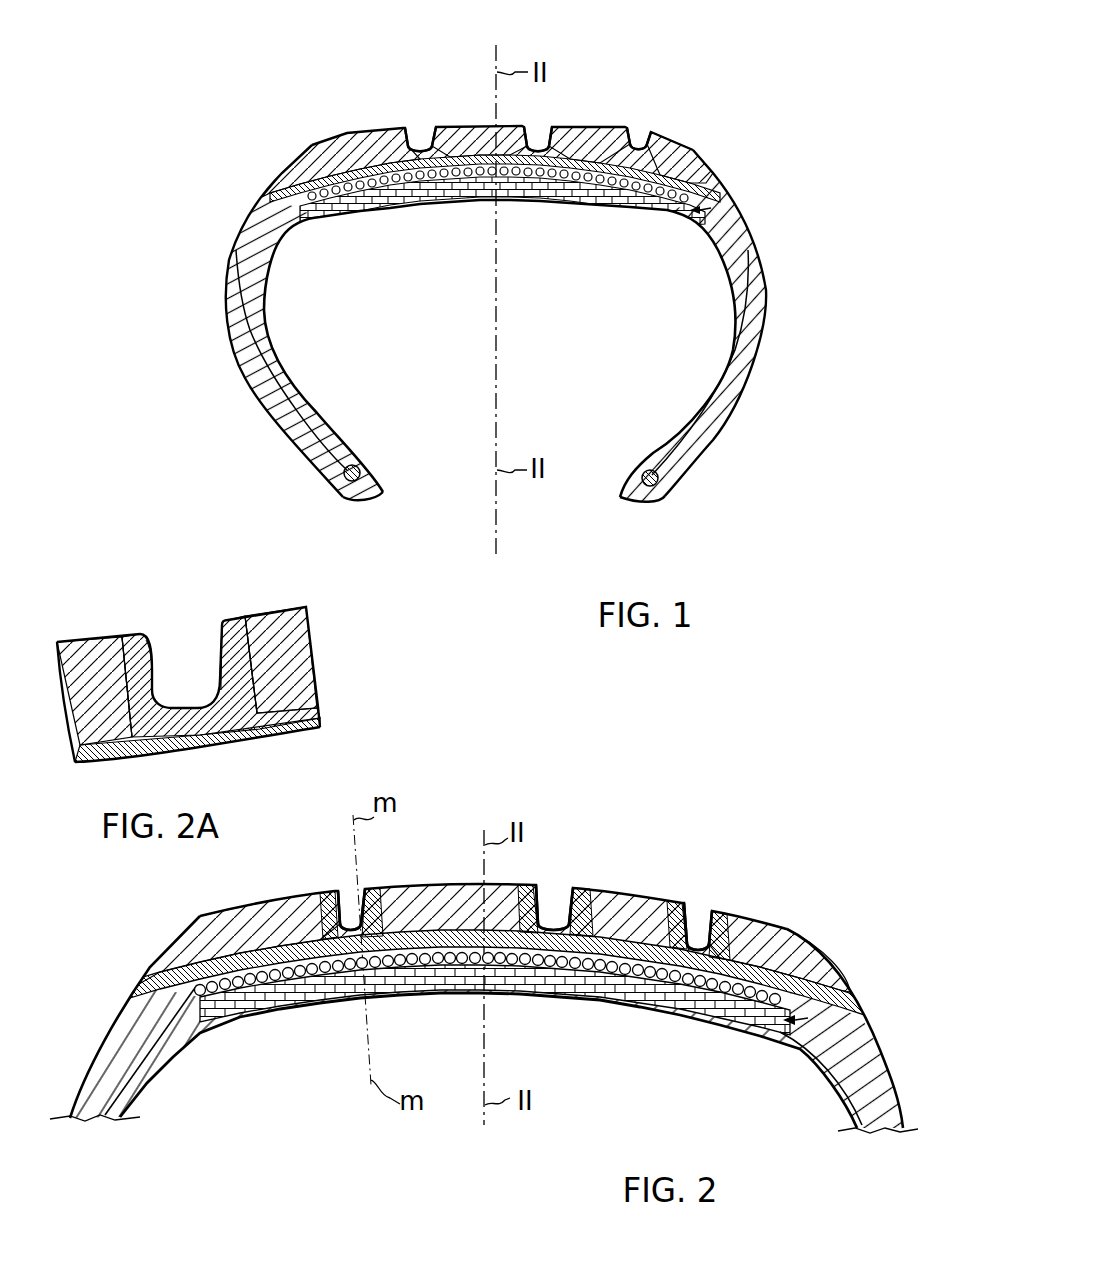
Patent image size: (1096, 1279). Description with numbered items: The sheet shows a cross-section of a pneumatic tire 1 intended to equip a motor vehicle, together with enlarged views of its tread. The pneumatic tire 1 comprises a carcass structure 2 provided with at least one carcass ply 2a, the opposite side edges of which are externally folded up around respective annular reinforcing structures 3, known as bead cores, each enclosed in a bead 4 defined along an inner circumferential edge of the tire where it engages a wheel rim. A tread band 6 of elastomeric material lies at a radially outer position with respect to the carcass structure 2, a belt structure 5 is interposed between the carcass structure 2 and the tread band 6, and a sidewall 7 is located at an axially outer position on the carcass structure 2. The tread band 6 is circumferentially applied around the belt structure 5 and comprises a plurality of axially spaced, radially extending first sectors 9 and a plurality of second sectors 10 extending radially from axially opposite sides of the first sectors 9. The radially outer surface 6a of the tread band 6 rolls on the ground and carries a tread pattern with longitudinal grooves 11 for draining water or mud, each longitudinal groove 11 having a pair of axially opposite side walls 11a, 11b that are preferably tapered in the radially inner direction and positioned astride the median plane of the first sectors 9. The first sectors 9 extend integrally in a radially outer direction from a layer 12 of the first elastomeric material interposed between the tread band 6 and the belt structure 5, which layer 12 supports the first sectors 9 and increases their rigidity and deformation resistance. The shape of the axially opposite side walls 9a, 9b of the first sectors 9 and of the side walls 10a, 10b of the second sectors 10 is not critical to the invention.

In FIG. 1, the pneumatic tire 1 is at (754, 103).
In FIG. 2, the pneumatic tire 1 is at (739, 849).
In FIG. 1, the carcass structure 2 is at (784, 299).
In FIG. 2, the carcass structure 2 is at (820, 1053).
In FIG. 1, the carcass ply 2a is at (710, 397).
In FIG. 1, the annular reinforcing structure 3 is at (668, 487).
In FIG. 1, the bead 4 is at (617, 481).
In FIG. 1, the belt structure 5 is at (760, 227).
In FIG. 2, the belt structure 5 is at (857, 1013).
In FIG. 1, the tread band 6 is at (715, 167).
In FIG. 2, the tread band 6 is at (812, 953).
In FIG. 1, the radially outer surface 6a is at (588, 123).
In FIG. 2, the radially outer surface 6a is at (631, 890).
In FIG. 1, the sidewall 7 is at (230, 325).
In FIG. 1, the first sector 9 is at (410, 154).
In FIG. 2A, the first sector 9 is at (237, 727).
In FIG. 2, the first sector 9 is at (735, 912).
In FIG. 2A, the side wall of first sector 9a is at (250, 640).
In FIG. 2, the side wall of first sector 9a is at (452, 920).
In FIG. 2A, the side wall of first sector 9b is at (122, 665).
In FIG. 2, the side wall of first sector 9b is at (327, 923).
In FIG. 1, the second sector 10 is at (670, 153).
In FIG. 2A, the second sector 10 is at (300, 683).
In FIG. 2, the second sector 10 is at (213, 933).
In FIG. 2, the side wall of second sector 10a is at (658, 945).
In FIG. 2, the side wall of second sector 10b is at (578, 995).
In FIG. 1, the longitudinal groove 11 is at (417, 129).
In FIG. 2A, the longitudinal groove 11 is at (188, 650).
In FIG. 2, the longitudinal groove 11 is at (357, 910).
In FIG. 2A, the side wall of longitudinal groove 11a is at (213, 630).
In FIG. 2, the side wall of longitudinal groove 11a is at (376, 897).
In FIG. 2A, the side wall of longitudinal groove 11b is at (167, 655).
In FIG. 2, the side wall of longitudinal groove 11b is at (343, 897).
In FIG. 1, the layer 12 is at (276, 188).
In FIG. 2A, the layer 12 is at (312, 727).
In FIG. 2, the layer 12 is at (597, 947).